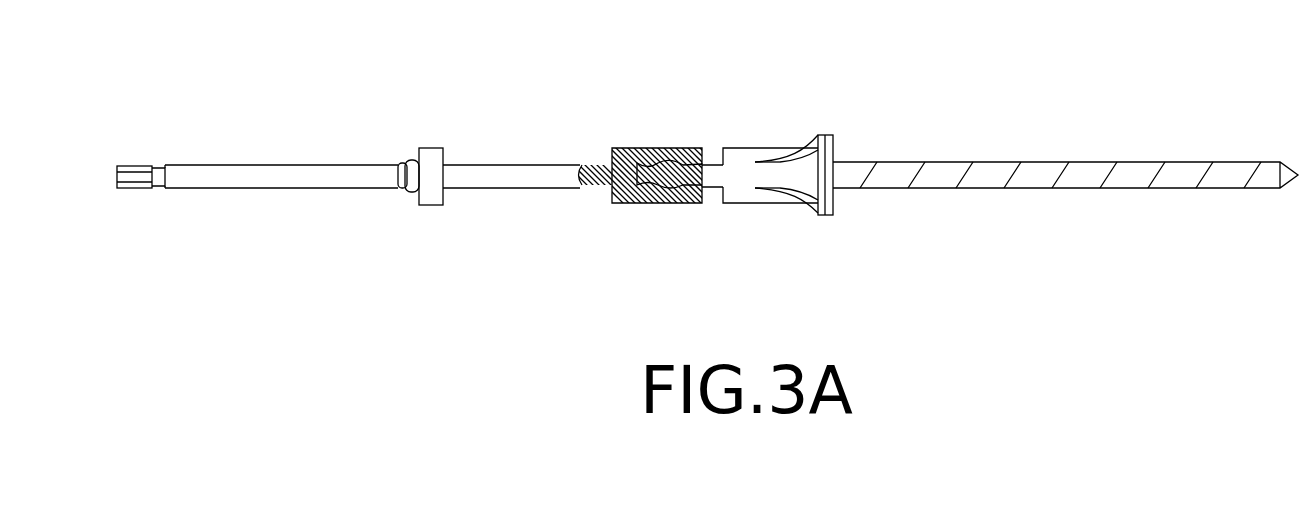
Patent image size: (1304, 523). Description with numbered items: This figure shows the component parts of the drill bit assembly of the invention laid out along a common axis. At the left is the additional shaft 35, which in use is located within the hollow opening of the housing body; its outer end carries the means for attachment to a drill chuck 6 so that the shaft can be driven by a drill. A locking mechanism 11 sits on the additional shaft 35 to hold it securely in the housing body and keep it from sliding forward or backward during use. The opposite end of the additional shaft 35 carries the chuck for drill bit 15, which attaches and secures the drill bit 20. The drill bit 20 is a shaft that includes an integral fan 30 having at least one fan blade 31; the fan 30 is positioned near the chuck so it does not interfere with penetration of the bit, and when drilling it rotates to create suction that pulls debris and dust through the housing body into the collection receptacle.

The means for attachment to drill chuck 6 is at (133, 189).
The additional shaft 35 is at (300, 189).
The locking mechanism for additional shaft 11 is at (413, 170).
The chuck for drill bit 15 is at (647, 148).
The fan blade 31 is at (800, 182).
The fan 30 is at (824, 147).
The drill bit 20 is at (1035, 177).